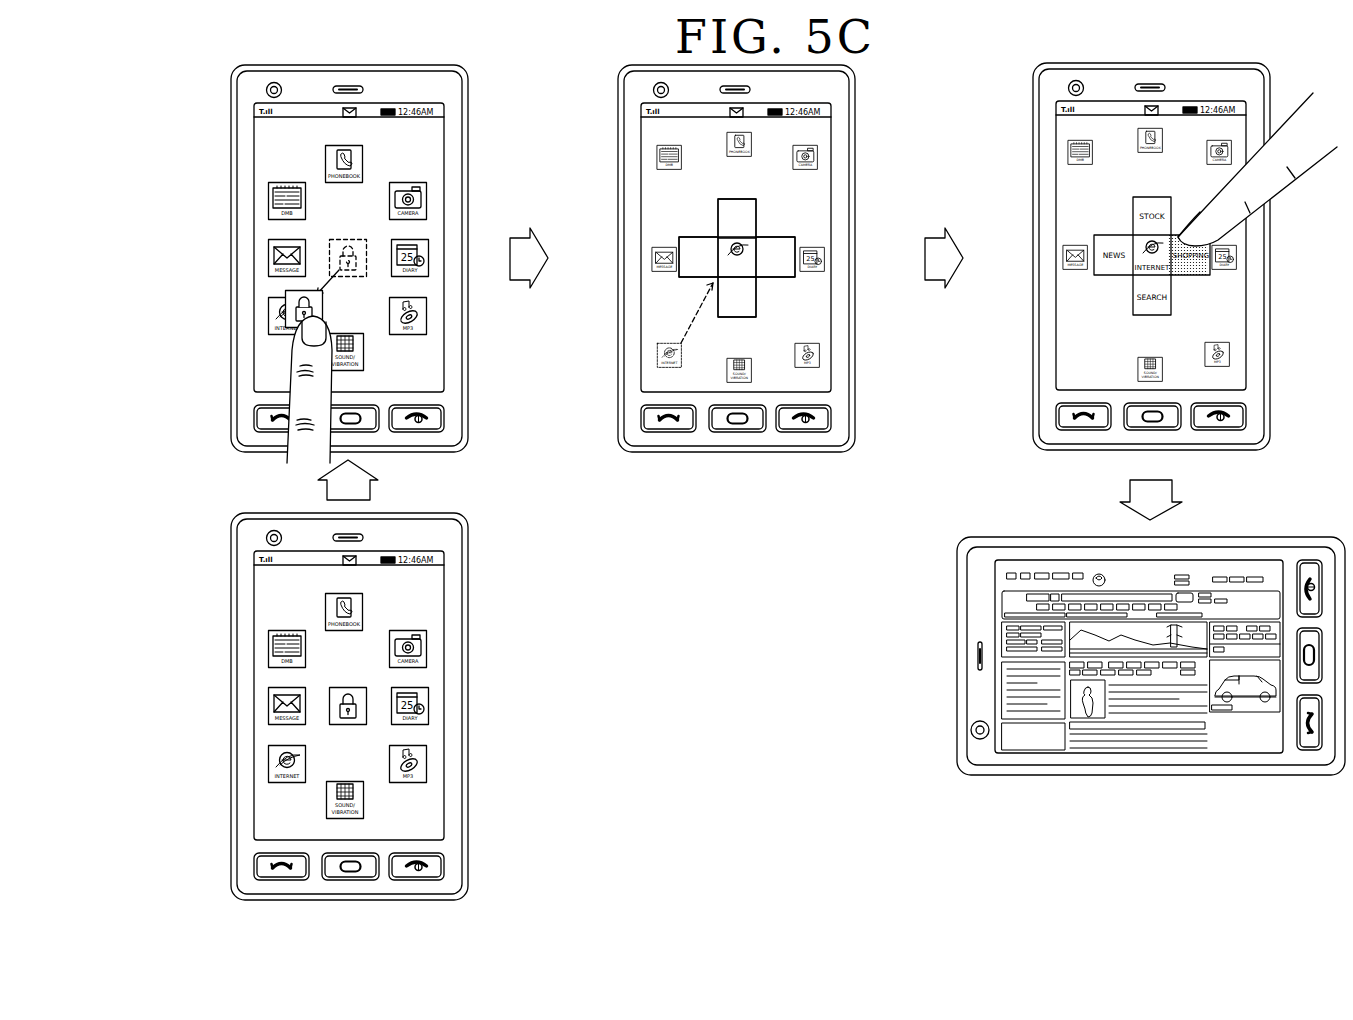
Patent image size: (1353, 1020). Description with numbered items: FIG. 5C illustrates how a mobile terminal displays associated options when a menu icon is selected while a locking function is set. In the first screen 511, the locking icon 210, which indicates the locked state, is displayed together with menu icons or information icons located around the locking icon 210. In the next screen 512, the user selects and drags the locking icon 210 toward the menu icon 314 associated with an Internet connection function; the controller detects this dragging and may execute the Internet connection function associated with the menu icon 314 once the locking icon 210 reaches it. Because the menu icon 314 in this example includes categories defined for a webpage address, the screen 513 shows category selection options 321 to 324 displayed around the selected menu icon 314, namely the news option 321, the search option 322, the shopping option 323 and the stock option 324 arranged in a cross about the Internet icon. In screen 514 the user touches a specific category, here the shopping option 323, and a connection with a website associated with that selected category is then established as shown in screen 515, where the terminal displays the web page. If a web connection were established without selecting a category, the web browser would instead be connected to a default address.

The locking icon 210 is at (330, 688).
The menu icon 314 is at (270, 322).
The category selection option 321 is at (690, 273).
The category selection option 322 is at (757, 303).
The category selection option 323 is at (782, 272).
The category selection option 324 is at (718, 222).
The screen 511 is at (321, 706).
The screen 512 is at (321, 264).
The screen 513 is at (743, 258).
The screen 514 is at (1055, 167).
The screen 515 is at (957, 660).